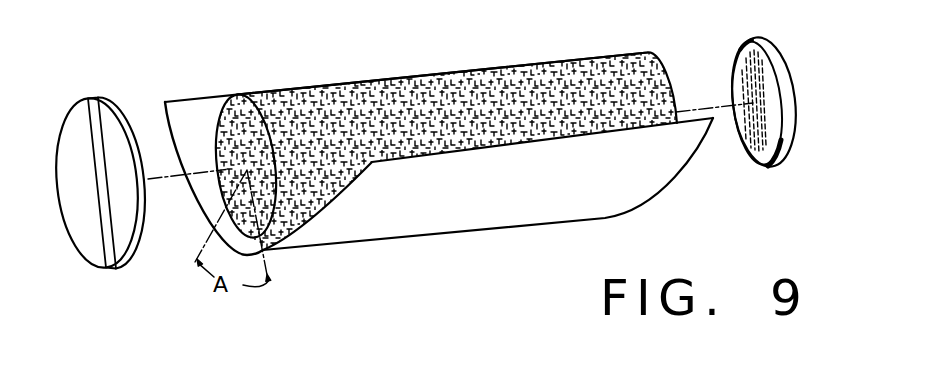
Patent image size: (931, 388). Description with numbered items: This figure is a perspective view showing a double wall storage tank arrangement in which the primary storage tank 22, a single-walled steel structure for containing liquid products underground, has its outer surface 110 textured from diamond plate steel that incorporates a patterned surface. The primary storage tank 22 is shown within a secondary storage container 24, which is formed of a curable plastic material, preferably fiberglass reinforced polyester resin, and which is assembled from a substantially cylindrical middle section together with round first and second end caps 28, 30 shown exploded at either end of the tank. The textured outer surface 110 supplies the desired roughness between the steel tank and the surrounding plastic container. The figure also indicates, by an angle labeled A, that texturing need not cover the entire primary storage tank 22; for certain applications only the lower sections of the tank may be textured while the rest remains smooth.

The primary storage tank 22 is at (517, 67).
The secondary storage container 24 is at (188, 97).
The first end cap 28 is at (88, 252).
The second end cap 30 is at (795, 128).
The outer surface 110 is at (333, 105).